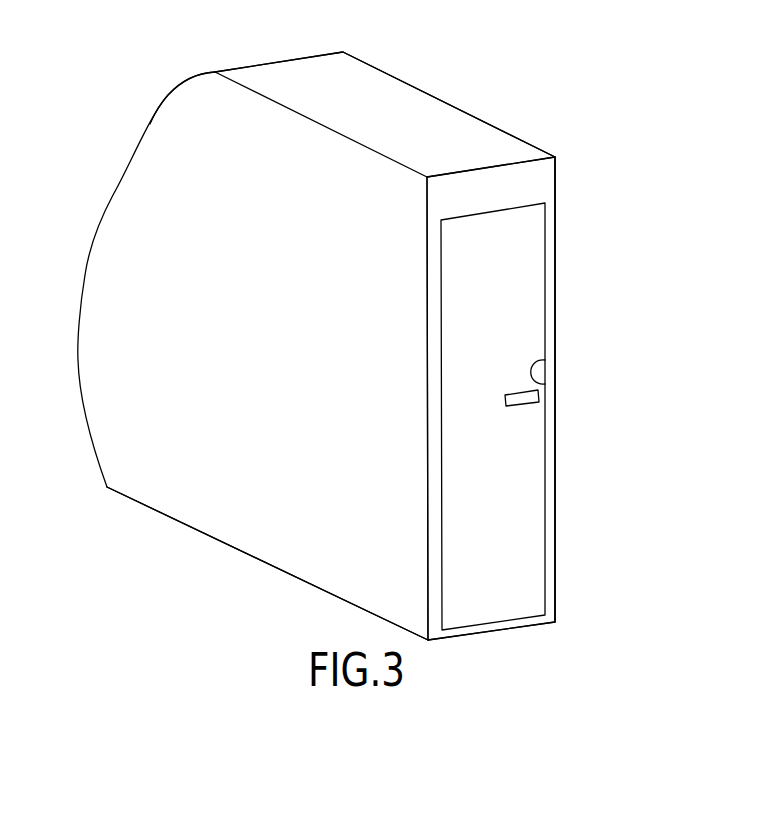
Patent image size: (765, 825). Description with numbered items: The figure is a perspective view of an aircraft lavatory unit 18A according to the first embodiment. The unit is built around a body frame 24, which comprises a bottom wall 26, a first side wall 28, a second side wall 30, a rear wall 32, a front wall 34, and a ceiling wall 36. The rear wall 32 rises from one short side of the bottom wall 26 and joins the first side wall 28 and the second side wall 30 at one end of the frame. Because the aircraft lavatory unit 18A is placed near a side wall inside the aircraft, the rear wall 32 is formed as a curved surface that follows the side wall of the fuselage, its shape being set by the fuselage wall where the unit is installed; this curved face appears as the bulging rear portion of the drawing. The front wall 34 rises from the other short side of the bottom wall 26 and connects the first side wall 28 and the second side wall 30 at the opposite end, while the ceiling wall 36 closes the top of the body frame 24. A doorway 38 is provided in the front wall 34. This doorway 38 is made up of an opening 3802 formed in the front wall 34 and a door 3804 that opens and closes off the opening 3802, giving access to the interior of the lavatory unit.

The aircraft lavatory unit 18A is at (105, 113).
The body frame 24 is at (497, 75).
The bottom wall 26 is at (303, 580).
The first side wall 28 is at (557, 263).
The second side wall 30 is at (160, 210).
The rear wall 32 is at (154, 124).
The front wall 34 is at (557, 514).
The ceiling wall 36 is at (354, 76).
The doorway 38 is at (538, 438).
The opening 3802 is at (550, 362).
The door 3804 is at (525, 483).